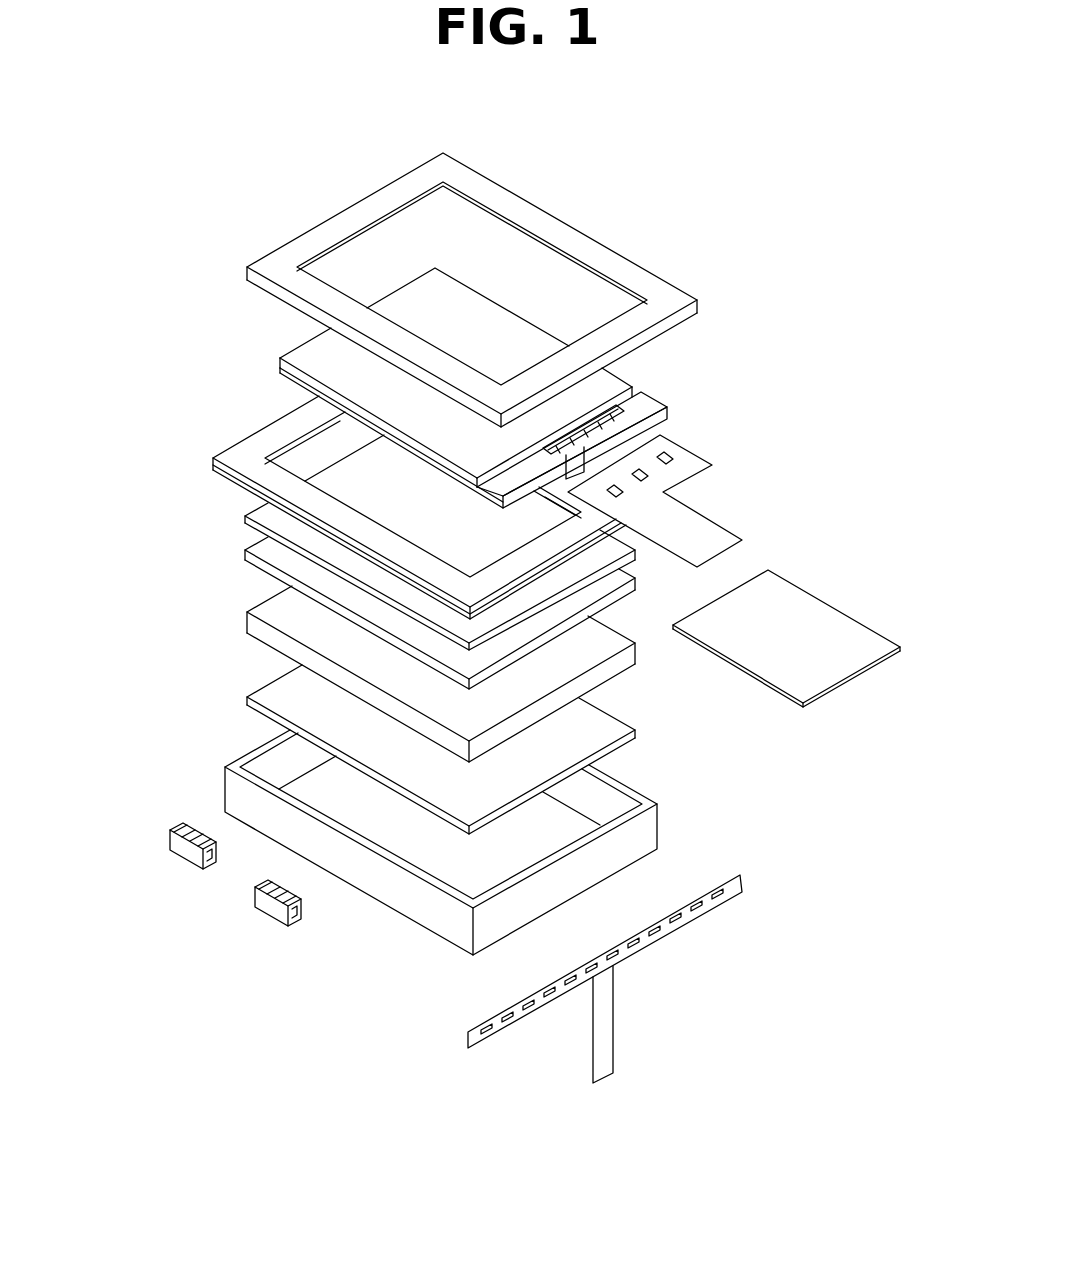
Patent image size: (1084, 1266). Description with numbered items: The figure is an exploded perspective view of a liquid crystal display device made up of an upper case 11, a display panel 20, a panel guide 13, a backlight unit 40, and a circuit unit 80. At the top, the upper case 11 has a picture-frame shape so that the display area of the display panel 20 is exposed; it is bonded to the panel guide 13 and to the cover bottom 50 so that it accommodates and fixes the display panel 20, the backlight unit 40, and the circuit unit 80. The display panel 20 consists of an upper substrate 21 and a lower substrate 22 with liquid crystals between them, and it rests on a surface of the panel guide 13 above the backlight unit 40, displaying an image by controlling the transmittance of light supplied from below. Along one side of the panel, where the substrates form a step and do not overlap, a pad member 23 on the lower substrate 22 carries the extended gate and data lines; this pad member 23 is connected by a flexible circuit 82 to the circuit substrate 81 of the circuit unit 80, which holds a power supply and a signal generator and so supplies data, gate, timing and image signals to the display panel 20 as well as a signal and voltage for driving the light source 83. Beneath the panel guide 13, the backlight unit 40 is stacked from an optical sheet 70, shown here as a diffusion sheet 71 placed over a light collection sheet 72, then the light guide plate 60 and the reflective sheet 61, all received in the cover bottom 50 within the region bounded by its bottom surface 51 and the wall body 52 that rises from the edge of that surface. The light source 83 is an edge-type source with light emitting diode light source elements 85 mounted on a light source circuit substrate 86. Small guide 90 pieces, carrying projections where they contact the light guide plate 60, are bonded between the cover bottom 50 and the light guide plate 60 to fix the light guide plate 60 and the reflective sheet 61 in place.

The upper case 11 is at (565, 233).
The panel guide 13 is at (270, 487).
The display panel 20 is at (526, 380).
The upper substrate 21 is at (643, 388).
The lower substrate 22 is at (655, 400).
The pad member 23 is at (637, 408).
The backlight unit 40 is at (365, 723).
The cover bottom 50 is at (397, 867).
The bottom surface 51 is at (480, 877).
The wall body 52 is at (418, 905).
The light guide plate 60 is at (260, 617).
The reflective sheet 61 is at (287, 702).
The optical sheet 70 is at (383, 562).
The diffusion sheet 71 is at (245, 578).
The light collection sheet 72 is at (245, 553).
The circuit unit 80 is at (733, 554).
The circuit substrate 81 is at (757, 603).
The flexible circuit 82 is at (690, 453).
The light source 83 is at (643, 971).
The light source element 85 is at (550, 1000).
The light source circuit substrate 86 is at (673, 930).
The guide 90 is at (192, 853).